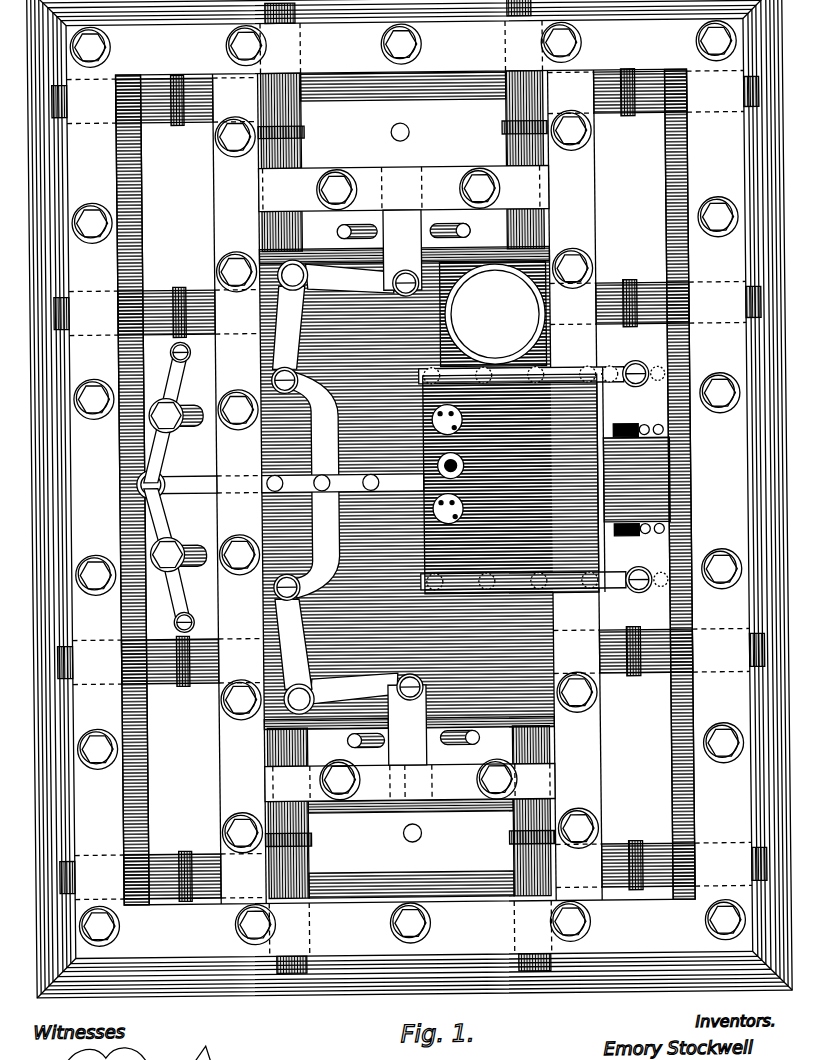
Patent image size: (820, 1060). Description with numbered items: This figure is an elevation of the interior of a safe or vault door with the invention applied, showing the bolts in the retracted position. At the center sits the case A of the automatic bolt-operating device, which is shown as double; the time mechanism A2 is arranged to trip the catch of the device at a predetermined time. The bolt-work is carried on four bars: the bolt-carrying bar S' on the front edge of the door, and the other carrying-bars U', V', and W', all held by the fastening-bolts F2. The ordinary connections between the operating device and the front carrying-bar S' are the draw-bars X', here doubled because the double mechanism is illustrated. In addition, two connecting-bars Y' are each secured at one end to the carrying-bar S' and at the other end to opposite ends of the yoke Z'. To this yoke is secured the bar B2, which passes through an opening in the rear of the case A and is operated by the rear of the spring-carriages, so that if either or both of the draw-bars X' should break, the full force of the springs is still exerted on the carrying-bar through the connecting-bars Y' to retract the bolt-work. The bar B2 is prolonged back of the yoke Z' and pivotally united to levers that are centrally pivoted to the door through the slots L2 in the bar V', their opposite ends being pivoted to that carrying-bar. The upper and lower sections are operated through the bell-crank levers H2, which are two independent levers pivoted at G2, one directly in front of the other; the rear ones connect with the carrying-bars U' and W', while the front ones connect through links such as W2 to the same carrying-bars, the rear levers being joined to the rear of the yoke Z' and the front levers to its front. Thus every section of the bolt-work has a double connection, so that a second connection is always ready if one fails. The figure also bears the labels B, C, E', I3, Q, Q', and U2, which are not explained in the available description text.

The case of the automatic bolt-operating device A is at (511, 484).
The time mechanism A2 is at (493, 314).
The lock spindle boss B is at (453, 508).
The bar B2 is at (280, 483).
The lock boss C is at (452, 419).
The bolt-operating crank head E' is at (178, 485).
The fastening-bolts F2 is at (410, 484).
The pivot of bell-crank levers G2 is at (295, 487).
The bell-crank levers H2 is at (352, 486).
The connecting link I3 is at (414, 485).
The slots L2 is at (192, 395).
The lower bolt bar Q is at (523, 582).
The upper bolt bar Q' is at (521, 385).
The bolt-carrying bar S' is at (658, 484).
The carrying-bar U' is at (400, 120).
The upper cross bar U2 is at (404, 115).
The carrying-bar V' is at (152, 489).
The carrying-bar W' is at (411, 848).
The link W2 is at (404, 826).
The draw-bars X' is at (637, 479).
The connecting-bars Y' is at (615, 480).
The yoke Z' is at (306, 488).